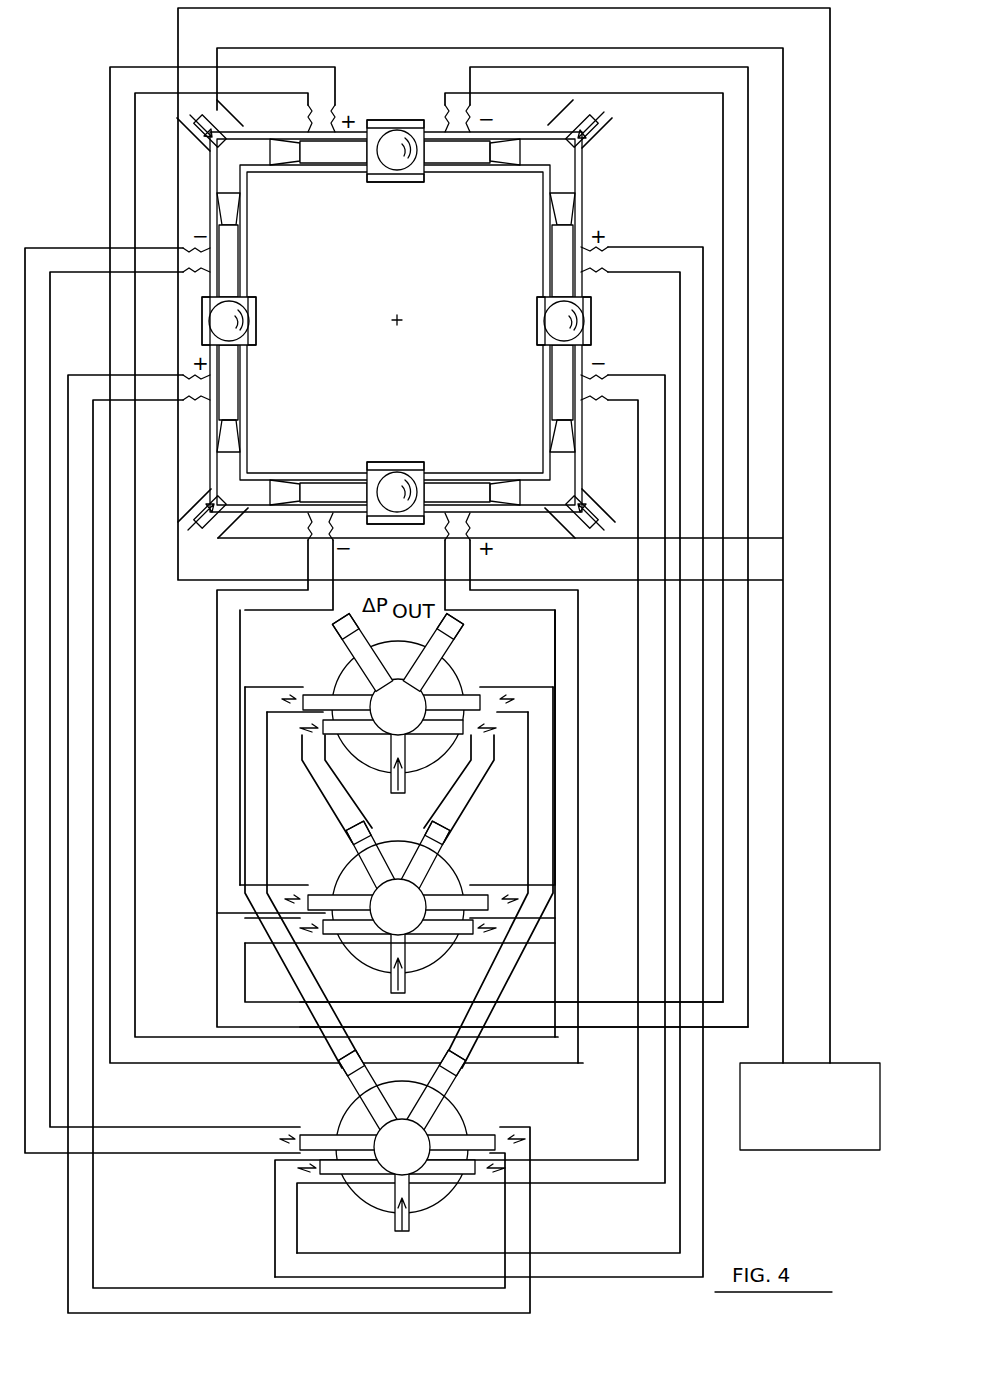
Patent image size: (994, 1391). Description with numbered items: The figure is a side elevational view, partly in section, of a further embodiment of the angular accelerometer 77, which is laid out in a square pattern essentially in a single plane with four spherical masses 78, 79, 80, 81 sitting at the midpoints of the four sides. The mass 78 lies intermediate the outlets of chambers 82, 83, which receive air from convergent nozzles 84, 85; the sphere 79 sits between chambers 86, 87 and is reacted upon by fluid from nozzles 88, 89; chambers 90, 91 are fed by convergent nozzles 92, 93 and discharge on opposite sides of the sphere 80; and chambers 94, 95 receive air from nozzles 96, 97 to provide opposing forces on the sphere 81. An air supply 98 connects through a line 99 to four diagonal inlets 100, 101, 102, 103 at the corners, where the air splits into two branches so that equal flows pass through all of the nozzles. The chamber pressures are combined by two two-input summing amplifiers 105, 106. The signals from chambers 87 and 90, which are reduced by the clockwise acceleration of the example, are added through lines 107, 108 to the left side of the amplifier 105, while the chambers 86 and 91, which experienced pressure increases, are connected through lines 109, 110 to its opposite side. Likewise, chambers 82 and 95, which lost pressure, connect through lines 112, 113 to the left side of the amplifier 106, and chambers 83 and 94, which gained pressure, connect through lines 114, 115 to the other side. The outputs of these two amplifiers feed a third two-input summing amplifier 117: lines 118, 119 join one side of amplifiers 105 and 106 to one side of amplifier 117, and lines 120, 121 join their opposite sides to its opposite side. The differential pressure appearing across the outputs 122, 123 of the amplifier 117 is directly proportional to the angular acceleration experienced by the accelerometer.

The angular accelerometer 77 is at (78, 88).
The spherical mass 78 is at (220, 318).
The spherical mass 79 is at (395, 135).
The spherical mass 80 is at (397, 480).
The spherical mass 81 is at (580, 320).
The chamber 82 is at (232, 266).
The chamber 83 is at (232, 372).
The convergent nozzle 84 is at (230, 212).
The convergent nozzle 85 is at (233, 437).
The chamber 86 is at (350, 160).
The chamber 87 is at (445, 158).
The nozzle 88 is at (287, 160).
The nozzle 89 is at (505, 160).
The chamber 90 is at (342, 488).
The chamber 91 is at (440, 490).
The convergent nozzle 92 is at (287, 488).
The convergent nozzle 93 is at (510, 490).
The chamber 94 is at (560, 270).
The chamber 95 is at (560, 372).
The nozzle 96 is at (570, 210).
The nozzle 97 is at (565, 435).
The air supply 98 is at (870, 1068).
The line 99 is at (830, 790).
The diagonal inlet 100 is at (205, 150).
The diagonal inlet 101 is at (180, 502).
The diagonal inlet 102 is at (598, 130).
The diagonal inlet 103 is at (600, 500).
The two-input summing amplifier 105 is at (352, 858).
The two-input summing amplifier 106 is at (432, 1200).
The line 107 is at (614, 1000).
The line 108 is at (217, 668).
The line 109 is at (122, 714).
The line 110 is at (560, 716).
The line 112 is at (185, 1130).
The line 113 is at (603, 1253).
The line 114 is at (170, 1288).
The line 115 is at (595, 1158).
The two-input summing amplifier 117 is at (452, 668).
The line 118 is at (312, 770).
The line 119 is at (348, 1078).
The line 120 is at (478, 770).
The line 121 is at (450, 1078).
The output 122 is at (342, 624).
The output 123 is at (452, 624).